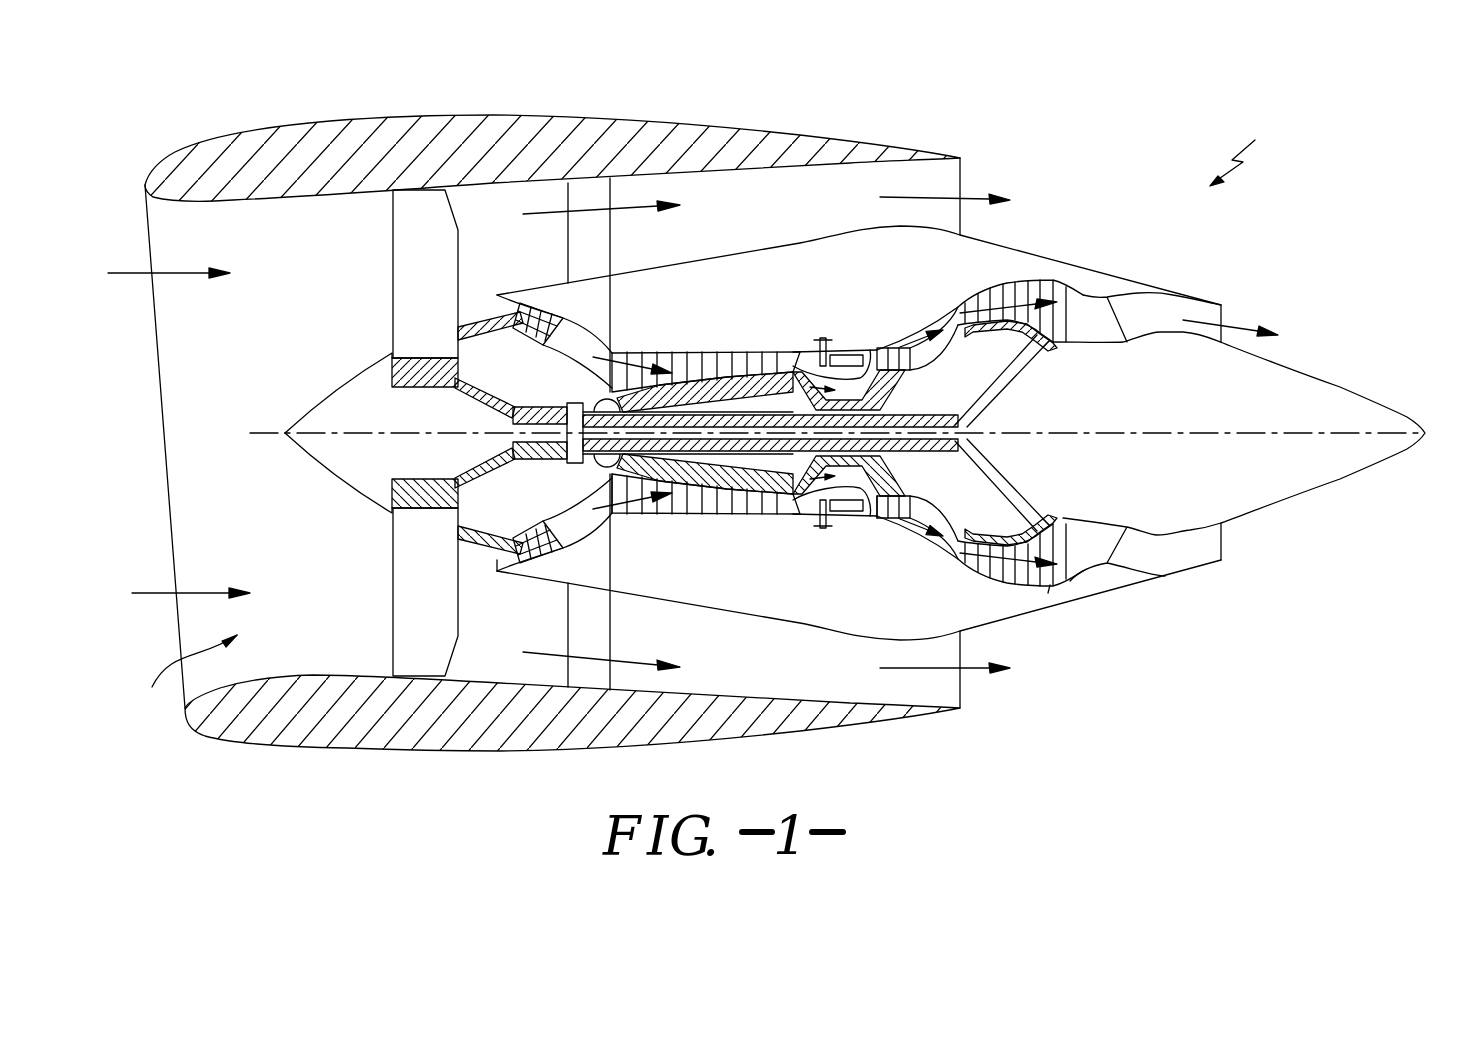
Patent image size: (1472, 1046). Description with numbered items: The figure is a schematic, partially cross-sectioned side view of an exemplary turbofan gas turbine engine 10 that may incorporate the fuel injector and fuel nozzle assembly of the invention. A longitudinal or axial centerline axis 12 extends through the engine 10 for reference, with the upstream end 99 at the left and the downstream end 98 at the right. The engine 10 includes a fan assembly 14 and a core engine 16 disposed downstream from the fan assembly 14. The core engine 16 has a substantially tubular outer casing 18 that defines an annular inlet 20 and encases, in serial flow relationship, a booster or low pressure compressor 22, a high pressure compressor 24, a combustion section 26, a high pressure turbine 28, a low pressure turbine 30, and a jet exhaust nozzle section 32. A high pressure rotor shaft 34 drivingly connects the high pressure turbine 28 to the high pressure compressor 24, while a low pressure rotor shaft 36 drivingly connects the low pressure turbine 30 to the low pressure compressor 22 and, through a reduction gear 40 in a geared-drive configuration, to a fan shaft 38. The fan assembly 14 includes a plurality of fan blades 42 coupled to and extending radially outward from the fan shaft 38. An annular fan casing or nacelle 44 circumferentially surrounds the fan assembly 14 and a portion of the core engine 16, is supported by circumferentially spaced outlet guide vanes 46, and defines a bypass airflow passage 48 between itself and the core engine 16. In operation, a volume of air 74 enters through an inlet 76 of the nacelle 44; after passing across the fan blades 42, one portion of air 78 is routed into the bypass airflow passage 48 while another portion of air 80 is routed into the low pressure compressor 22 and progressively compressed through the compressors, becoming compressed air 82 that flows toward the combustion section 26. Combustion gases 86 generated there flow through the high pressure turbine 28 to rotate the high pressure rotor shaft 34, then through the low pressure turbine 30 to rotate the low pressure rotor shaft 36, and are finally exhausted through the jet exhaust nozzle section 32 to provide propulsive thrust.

The gas turbine engine 10 is at (1248, 149).
The axial centerline axis 12 is at (1133, 433).
The fan assembly 14 is at (492, 215).
The core engine 16 is at (822, 228).
The outer casing 18 is at (803, 627).
The annular inlet 20 is at (502, 557).
The low pressure compressor 22 is at (563, 530).
The high pressure compressor 24 is at (645, 505).
The combustion section 26 is at (837, 522).
The high pressure turbine 28 is at (907, 512).
The low pressure turbine 30 is at (1048, 593).
The jet exhaust nozzle section 32 is at (1137, 560).
The high pressure rotor shaft 34 is at (893, 388).
The low pressure rotor shaft 36 is at (997, 385).
The fan shaft 38 is at (458, 395).
The reduction gear 40 is at (567, 396).
The fan blades 42 is at (407, 267).
The nacelle 44 is at (402, 113).
The outlet guide vanes 46 is at (610, 190).
The bypass airflow passage 48 is at (728, 218).
The air 74 is at (178, 273).
The inlet 76 is at (182, 677).
The bypass air 78 is at (627, 215).
The core air 80 is at (478, 307).
The compressed air 82 is at (627, 353).
The combustion gases 86 is at (890, 347).
The downstream end 98 is at (1432, 441).
The upstream end 99 is at (104, 441).